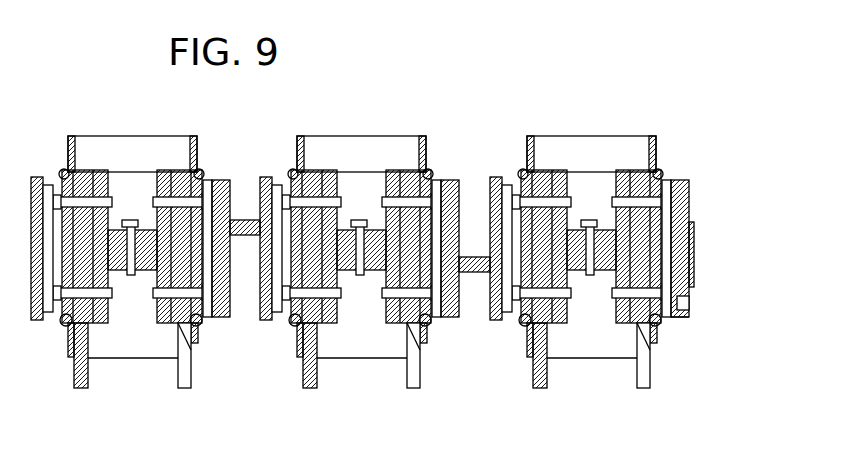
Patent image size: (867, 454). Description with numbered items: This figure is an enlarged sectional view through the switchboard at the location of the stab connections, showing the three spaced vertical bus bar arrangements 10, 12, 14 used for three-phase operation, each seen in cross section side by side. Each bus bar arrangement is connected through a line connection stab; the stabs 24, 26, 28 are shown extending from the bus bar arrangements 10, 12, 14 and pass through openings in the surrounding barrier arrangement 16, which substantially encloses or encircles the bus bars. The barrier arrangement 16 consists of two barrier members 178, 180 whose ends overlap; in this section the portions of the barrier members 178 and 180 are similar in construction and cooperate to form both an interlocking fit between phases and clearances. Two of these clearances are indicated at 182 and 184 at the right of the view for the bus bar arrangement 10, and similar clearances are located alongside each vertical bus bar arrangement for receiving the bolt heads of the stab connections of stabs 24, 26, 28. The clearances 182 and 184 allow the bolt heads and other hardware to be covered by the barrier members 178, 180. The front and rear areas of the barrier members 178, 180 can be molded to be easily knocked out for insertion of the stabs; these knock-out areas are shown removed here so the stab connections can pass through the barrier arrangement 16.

The bus bar arrangement 10 is at (618, 255).
The bus bar arrangement 12 is at (375, 255).
The bus bar arrangement 14 is at (145, 255).
The barrier arrangement 16 is at (692, 303).
The stab 24 is at (651, 382).
The stab 26 is at (421, 382).
The stab 28 is at (192, 382).
The barrier member 178 is at (685, 181).
The barrier member 180 is at (694, 251).
The clearance 182 is at (688, 318).
The clearance 184 is at (517, 322).